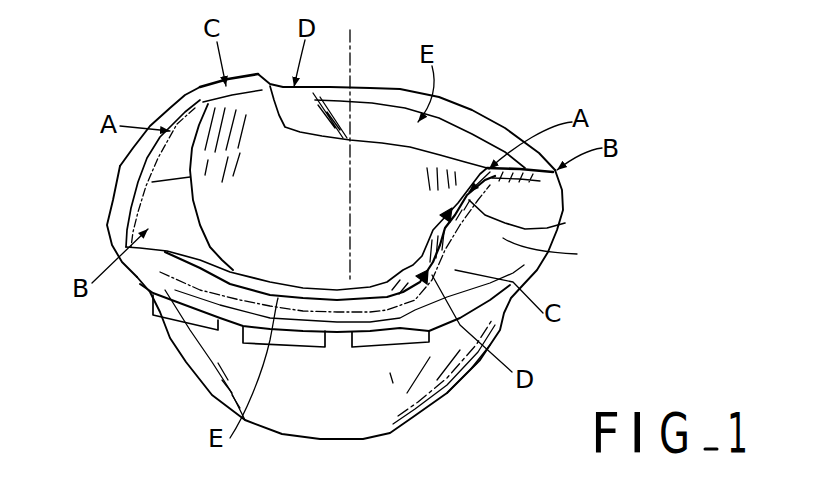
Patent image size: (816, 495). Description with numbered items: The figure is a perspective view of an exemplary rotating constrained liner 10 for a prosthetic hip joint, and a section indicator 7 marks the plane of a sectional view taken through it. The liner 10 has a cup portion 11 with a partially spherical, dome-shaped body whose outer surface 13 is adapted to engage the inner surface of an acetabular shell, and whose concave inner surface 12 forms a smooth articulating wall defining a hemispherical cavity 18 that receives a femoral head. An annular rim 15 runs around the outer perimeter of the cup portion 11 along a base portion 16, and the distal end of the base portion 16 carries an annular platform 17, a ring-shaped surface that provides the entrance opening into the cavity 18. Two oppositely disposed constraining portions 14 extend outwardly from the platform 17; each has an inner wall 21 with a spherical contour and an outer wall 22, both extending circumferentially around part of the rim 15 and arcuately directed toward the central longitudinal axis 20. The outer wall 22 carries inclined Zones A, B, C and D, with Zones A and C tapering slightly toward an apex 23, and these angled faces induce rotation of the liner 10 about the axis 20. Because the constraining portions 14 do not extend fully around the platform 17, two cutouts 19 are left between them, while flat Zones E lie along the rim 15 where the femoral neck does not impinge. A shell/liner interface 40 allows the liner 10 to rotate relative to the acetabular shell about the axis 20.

The rotating constrained liner 10 is at (540, 93).
The cup portion 11 is at (360, 417).
The inner surface 12 is at (415, 203).
The outer surface 13 is at (322, 416).
The constraining portion 14 is at (145, 168).
The annular rim 15 is at (146, 283).
The base portion 16 is at (100, 248).
The annular platform 17 is at (240, 292).
The cavity 18 is at (300, 242).
The cutout 19 is at (390, 134).
The central longitudinal axis 20 is at (350, 62).
The inner wall 21 is at (251, 128).
The outer wall 22 is at (500, 258).
The apex 23 is at (199, 91).
The shell/liner interface 40 is at (182, 324).
The section line 7- 7 is at (147, 92).